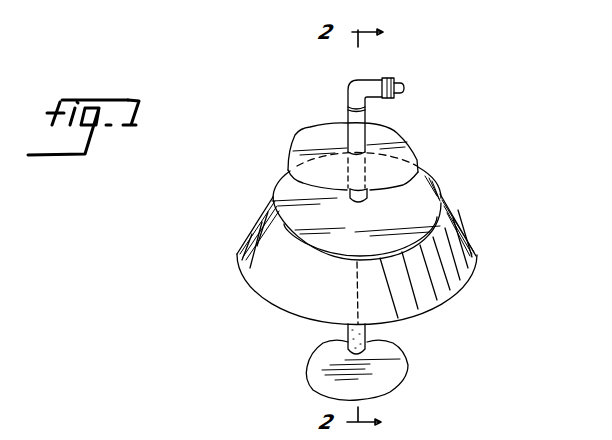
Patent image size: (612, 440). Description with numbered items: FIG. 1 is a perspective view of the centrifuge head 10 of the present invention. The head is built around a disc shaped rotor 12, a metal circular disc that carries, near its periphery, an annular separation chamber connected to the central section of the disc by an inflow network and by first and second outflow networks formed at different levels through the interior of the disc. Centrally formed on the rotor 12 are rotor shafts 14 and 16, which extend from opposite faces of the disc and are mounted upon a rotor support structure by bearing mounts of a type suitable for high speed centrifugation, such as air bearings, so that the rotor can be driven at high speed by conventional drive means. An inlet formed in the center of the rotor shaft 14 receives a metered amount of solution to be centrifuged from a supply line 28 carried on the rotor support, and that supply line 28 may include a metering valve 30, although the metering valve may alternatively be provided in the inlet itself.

The centrifuge head 10 is at (492, 223).
The rotor 12 is at (276, 190).
The rotor shaft 14 is at (368, 193).
The rotor shaft 16 is at (366, 336).
The supply line 28 is at (349, 88).
The metering valve 30 is at (392, 78).